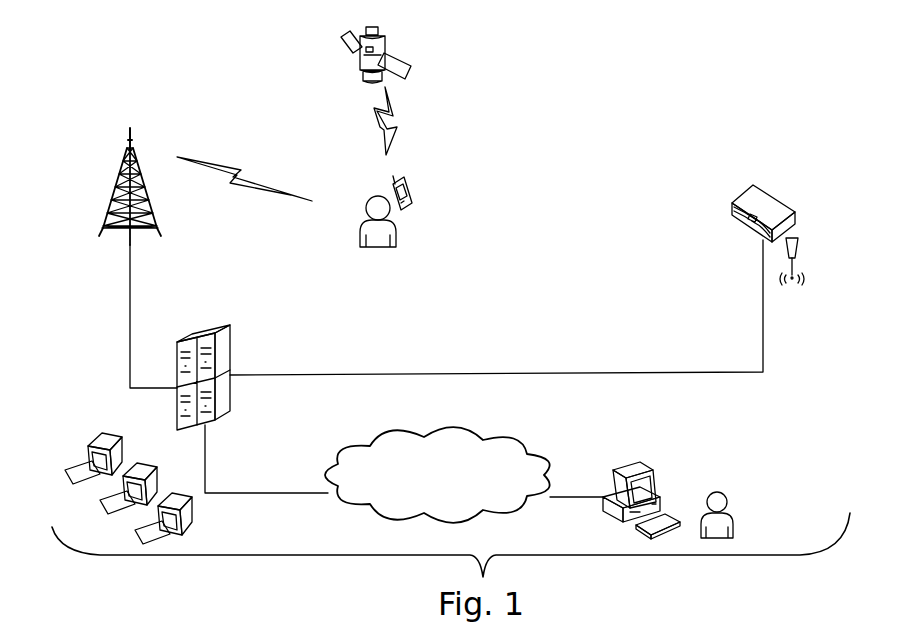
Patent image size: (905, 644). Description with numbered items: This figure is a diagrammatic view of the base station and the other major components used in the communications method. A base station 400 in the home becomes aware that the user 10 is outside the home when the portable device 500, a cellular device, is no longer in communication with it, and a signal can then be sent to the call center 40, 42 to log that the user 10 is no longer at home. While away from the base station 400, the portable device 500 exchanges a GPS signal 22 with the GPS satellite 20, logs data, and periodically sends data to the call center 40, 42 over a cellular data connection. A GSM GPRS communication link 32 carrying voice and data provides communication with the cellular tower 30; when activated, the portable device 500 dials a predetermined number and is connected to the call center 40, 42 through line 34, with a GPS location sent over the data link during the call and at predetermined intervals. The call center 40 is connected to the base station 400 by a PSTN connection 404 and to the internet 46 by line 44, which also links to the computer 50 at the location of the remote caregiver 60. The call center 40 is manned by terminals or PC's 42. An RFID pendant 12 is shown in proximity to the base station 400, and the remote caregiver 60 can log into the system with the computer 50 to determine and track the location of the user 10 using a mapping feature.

The user 10 is at (384, 234).
The RFID pendant 12 is at (800, 262).
The GPS satellite 20 is at (395, 62).
The GPS signal 22 is at (399, 117).
The cellular tower 30 is at (148, 215).
The GSM GPRS communication link 32 is at (237, 161).
The line 34 is at (131, 300).
The call center 40 is at (212, 338).
The terminals or PC's 42 is at (90, 440).
The line 44 is at (243, 493).
The internet 46 is at (422, 448).
The computer 50 is at (647, 490).
The remote caregiver 60 is at (735, 517).
The base station 400 is at (745, 195).
The PSTN connection 404 is at (540, 373).
The portable device 500 is at (409, 187).